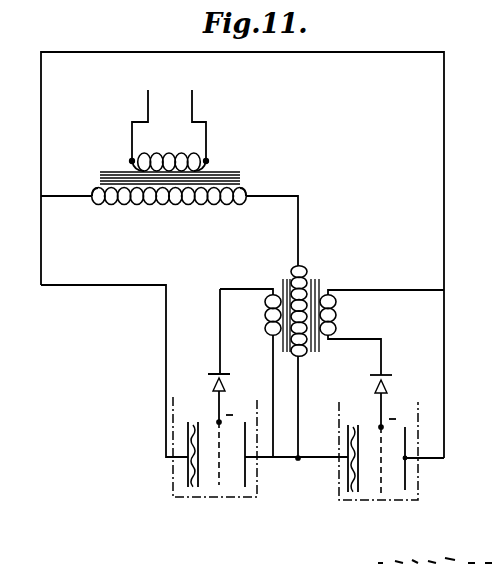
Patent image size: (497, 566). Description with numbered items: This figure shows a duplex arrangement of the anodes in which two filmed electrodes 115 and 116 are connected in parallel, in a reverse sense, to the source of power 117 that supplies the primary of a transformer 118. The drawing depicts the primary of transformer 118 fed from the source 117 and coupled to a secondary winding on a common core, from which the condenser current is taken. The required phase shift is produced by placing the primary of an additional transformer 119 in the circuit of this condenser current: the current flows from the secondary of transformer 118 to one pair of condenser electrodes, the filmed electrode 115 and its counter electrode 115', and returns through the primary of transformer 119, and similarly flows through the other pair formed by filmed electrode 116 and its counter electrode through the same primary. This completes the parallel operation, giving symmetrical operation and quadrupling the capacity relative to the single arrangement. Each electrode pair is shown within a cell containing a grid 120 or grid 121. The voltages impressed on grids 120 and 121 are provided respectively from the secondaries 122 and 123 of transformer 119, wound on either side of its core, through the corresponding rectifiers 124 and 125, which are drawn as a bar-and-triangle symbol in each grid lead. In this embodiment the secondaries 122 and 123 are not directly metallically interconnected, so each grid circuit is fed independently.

The filmed electrode 115 is at (171, 454).
The condenser electrode 115' is at (351, 459).
The filmed electrode 116 is at (352, 474).
The source of power 117 is at (173, 111).
The transformer 118 is at (246, 182).
The additional transformer 119 is at (317, 275).
The grid 120 is at (218, 483).
The grid 121 is at (380, 483).
The secondary 122 is at (250, 312).
The secondary 123 is at (336, 320).
The rectifier 124 is at (212, 383).
The rectifier 125 is at (389, 388).